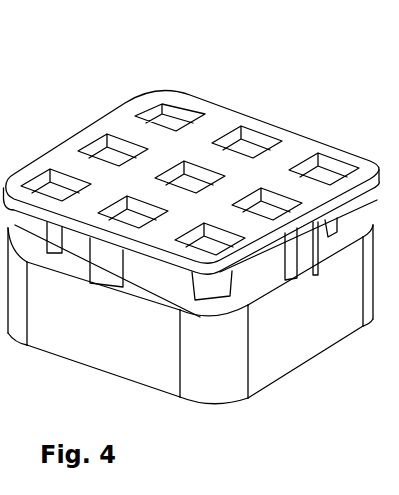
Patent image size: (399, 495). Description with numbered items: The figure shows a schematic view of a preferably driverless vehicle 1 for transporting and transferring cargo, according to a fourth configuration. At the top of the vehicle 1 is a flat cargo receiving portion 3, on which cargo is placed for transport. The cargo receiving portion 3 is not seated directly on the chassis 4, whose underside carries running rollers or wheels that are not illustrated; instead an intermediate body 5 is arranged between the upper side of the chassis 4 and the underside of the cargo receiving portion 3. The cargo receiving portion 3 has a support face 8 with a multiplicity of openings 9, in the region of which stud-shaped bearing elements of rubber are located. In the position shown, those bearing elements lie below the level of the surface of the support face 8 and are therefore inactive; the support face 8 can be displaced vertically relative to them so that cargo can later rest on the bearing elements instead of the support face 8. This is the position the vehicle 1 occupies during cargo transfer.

The vehicle 1 is at (265, 91).
The cargo receiving portion 3 is at (374, 163).
The chassis 4 is at (262, 373).
The intermediate body 5 is at (302, 256).
The support face 8 is at (310, 142).
The openings 9 is at (107, 153).